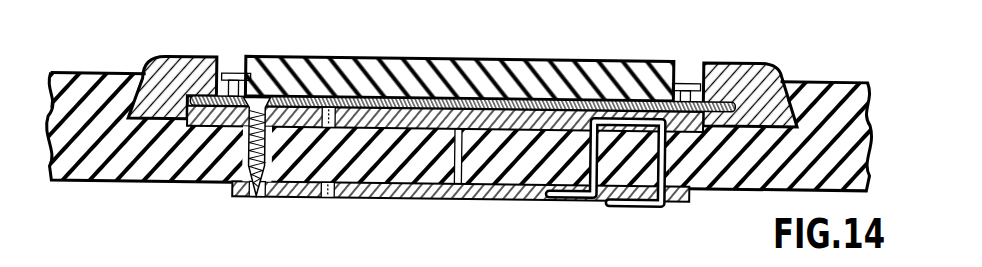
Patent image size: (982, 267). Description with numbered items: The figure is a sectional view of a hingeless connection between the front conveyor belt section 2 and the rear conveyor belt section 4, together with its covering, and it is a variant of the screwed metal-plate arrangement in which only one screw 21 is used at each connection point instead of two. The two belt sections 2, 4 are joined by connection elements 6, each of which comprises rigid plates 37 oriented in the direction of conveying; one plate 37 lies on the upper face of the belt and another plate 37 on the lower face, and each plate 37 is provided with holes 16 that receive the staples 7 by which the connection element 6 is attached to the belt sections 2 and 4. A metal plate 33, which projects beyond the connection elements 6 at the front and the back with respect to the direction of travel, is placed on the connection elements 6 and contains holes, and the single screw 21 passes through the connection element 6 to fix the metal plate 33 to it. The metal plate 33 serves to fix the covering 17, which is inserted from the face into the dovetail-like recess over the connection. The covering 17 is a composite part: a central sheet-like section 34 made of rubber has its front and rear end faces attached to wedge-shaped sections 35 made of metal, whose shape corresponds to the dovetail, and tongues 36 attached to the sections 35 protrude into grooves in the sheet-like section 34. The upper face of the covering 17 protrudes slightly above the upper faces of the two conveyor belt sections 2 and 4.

The front conveyor belt section 2 is at (767, 201).
The rear conveyor belt section 4 is at (113, 203).
The connection element 6 is at (379, 210).
The staple 7 is at (594, 214).
The hole 16 is at (323, 200).
The covering 17 is at (688, 43).
The screw 21 is at (236, 168).
The metal plate 33 is at (603, 100).
The central sheet-like section 34 is at (509, 79).
The wedge-shaped section 35 is at (191, 59).
The tongue 36 is at (237, 60).
The rigid plate 37 is at (531, 116).